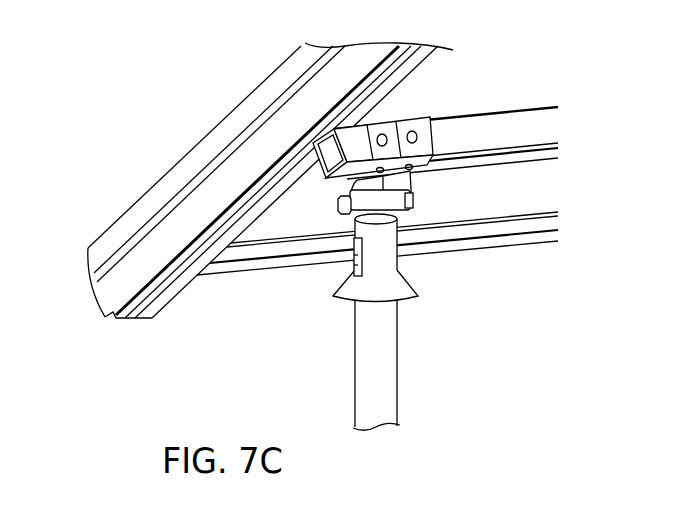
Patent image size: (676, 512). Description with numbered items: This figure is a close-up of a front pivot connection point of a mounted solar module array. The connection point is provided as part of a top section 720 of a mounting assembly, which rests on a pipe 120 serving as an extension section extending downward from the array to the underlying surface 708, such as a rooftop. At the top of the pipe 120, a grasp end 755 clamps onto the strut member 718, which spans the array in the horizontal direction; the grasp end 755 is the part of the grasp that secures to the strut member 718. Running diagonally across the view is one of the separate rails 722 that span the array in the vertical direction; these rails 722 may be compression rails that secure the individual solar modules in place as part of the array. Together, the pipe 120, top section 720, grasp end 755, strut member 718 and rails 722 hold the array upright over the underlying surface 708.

The underlying surface 708 is at (176, 86).
The rails 722 is at (105, 288).
The top section 720 is at (306, 288).
The strut member 718 is at (518, 117).
The grasp end 755 is at (424, 142).
The pipes 120 is at (392, 345).